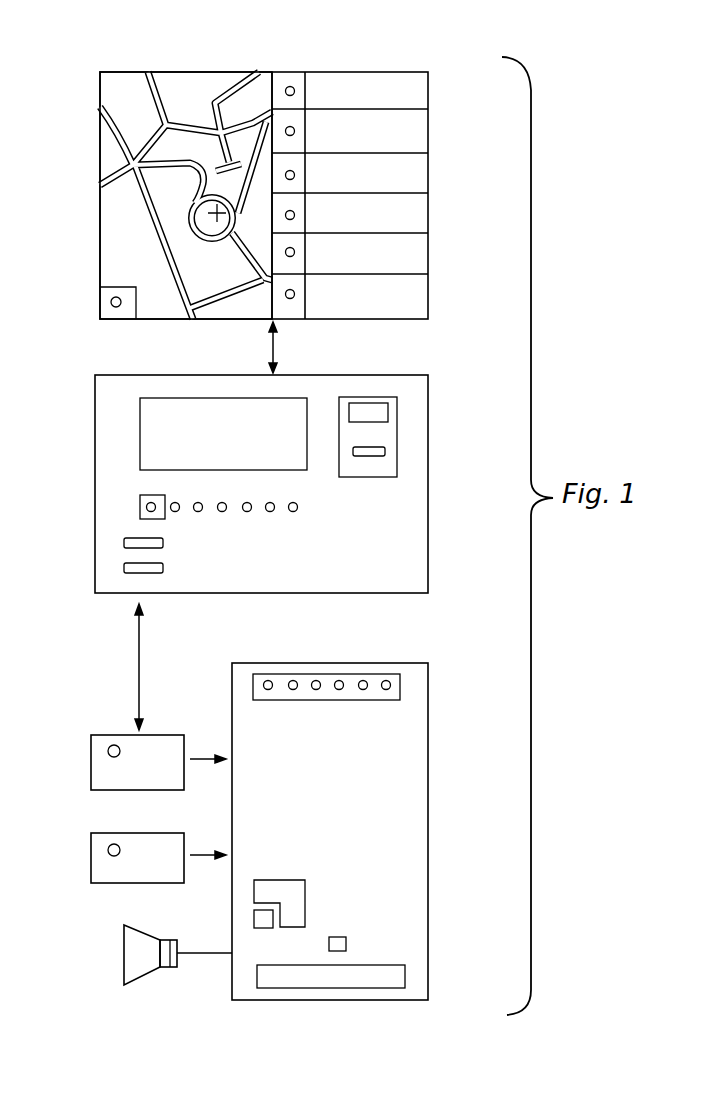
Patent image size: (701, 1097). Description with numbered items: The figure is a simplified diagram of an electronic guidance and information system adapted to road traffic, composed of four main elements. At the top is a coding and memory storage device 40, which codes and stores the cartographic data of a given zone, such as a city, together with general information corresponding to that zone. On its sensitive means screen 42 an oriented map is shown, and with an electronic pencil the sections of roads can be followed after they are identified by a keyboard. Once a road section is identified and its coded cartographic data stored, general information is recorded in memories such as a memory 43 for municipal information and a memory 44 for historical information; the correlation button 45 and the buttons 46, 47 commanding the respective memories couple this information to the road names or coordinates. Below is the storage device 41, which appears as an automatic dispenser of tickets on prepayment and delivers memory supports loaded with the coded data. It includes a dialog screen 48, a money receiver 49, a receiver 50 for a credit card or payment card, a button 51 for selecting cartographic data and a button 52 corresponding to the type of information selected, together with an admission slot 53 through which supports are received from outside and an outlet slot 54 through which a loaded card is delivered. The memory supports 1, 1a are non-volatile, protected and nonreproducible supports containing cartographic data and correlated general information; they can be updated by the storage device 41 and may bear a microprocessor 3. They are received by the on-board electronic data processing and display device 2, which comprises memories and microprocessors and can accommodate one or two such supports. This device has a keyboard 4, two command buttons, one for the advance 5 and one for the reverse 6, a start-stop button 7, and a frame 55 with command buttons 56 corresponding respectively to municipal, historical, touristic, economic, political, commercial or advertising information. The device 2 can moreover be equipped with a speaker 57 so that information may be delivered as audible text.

The memory support 1 is at (110, 735).
The memory support 1a is at (92, 862).
The on-board electronic data processing and display device 2 is at (428, 792).
The microprocessor 3 is at (110, 753).
The keyboard 4 is at (275, 988).
The command button for advance 5 is at (256, 893).
The command button for reverse 6 is at (254, 918).
The start-stop button 7 is at (346, 944).
The coding and memory storage device 40 is at (100, 220).
The storage device 41 is at (95, 440).
The sensitive means screen 42 is at (194, 62).
The memory for municipal information 43 is at (410, 92).
The memory for historical information 44 is at (415, 135).
The correlation button 45 is at (111, 303).
The memory command button 46 is at (292, 82).
The memory command button 47 is at (297, 131).
The dialog screen 48 is at (203, 398).
The money receiver 49 is at (388, 412).
The credit card or payment card receiver 50 is at (385, 450).
The cartographic data selection button 51 is at (140, 510).
The information type selection button 52 is at (198, 513).
The admission slot 53 is at (124, 543).
The outlet slot 54 is at (124, 568).
The frame 55 is at (400, 688).
The command buttons 56 is at (364, 681).
The speaker 57 is at (128, 985).